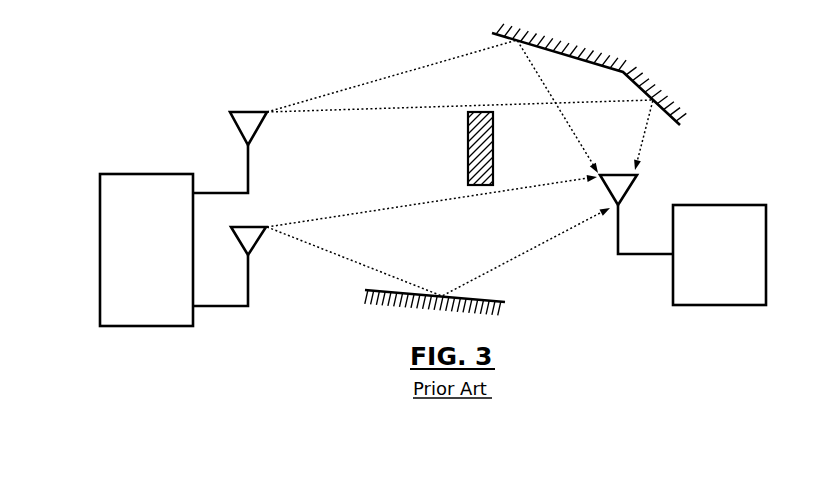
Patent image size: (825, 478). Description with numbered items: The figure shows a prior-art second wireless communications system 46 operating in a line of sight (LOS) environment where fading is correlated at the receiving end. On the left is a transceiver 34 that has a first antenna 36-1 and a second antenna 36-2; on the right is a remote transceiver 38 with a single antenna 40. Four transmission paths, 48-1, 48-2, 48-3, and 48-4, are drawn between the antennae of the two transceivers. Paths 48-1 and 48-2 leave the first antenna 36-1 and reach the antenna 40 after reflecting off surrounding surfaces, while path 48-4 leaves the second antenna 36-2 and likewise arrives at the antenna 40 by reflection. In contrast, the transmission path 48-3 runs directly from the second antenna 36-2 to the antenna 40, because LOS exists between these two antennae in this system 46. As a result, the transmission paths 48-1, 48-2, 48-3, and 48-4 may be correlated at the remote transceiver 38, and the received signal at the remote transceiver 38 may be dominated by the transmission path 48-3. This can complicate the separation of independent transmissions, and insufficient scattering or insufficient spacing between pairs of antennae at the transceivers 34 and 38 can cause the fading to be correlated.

The transceiver 34 is at (137, 174).
The first antenna 36-1 is at (232, 112).
The second antenna 36-2 is at (250, 227).
The remote transceiver 38 is at (725, 205).
The antenna 40 is at (639, 173).
The second wireless communications system 46 is at (265, 55).
The transmission path 48-1 is at (412, 58).
The transmission path 48-2 is at (410, 105).
The transmission path 48-3 is at (453, 195).
The transmission path 48-4 is at (552, 238).